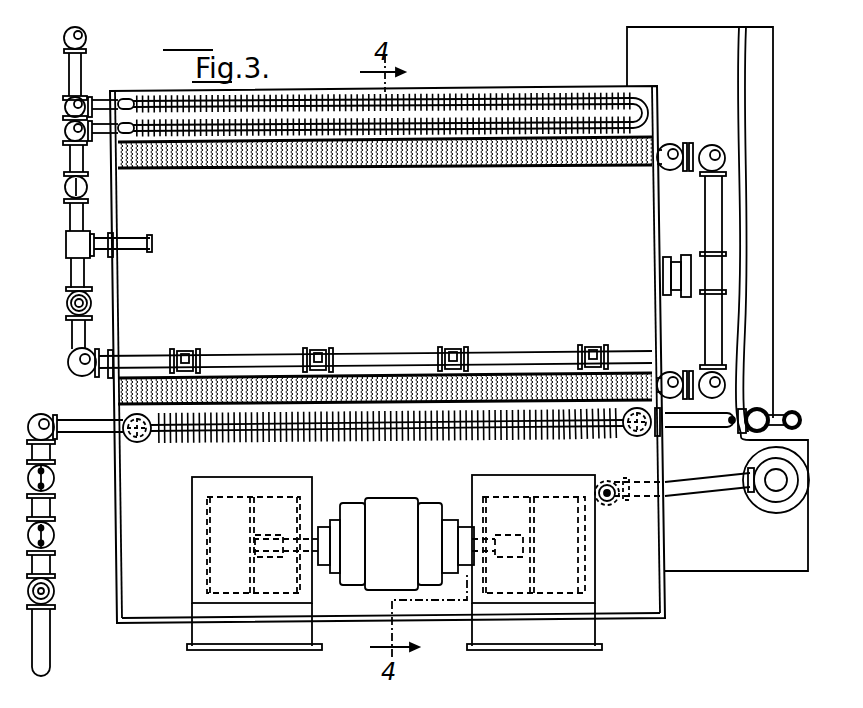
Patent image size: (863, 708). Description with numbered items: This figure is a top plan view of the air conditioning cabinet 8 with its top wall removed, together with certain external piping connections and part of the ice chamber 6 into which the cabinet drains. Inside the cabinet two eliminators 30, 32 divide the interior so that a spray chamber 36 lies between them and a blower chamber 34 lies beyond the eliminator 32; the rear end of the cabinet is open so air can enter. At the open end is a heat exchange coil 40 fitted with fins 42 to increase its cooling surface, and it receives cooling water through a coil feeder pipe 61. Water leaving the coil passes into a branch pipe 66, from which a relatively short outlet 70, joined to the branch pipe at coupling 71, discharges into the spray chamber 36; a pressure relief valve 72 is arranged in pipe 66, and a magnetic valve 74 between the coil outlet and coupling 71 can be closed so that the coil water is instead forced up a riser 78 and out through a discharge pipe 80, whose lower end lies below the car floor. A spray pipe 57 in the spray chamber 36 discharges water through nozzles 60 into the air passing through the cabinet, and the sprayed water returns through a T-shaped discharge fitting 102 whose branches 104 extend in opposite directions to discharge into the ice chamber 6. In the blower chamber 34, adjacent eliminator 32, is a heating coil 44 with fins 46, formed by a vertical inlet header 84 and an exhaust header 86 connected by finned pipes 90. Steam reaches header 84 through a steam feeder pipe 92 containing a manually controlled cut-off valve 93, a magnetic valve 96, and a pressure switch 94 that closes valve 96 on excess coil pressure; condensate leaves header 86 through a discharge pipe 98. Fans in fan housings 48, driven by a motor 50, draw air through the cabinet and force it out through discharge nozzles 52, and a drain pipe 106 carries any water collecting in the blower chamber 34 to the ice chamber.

The ice chamber 6 is at (700, 232).
The air conditioning cabinet 8 is at (666, 539).
The upper filter pad 30 is at (419, 168).
The eliminator 32 is at (534, 378).
The blower chamber 34 is at (391, 533).
The spray chamber 36 is at (387, 354).
The heat exchange coil 40 is at (472, 95).
The fins 42 is at (537, 95).
The heating coil 44 is at (160, 438).
The fins 46 is at (236, 438).
The fan housings 48 is at (202, 550).
The motor 50 is at (392, 520).
The discharge nozzles 52 is at (225, 642).
The spray pipe 57 is at (238, 358).
The nozzles 60 is at (183, 350).
The coil feeder pipe 61 is at (64, 106).
The branch pipe 66 is at (71, 273).
The outlet 70 is at (152, 244).
The coupling 71 is at (66, 245).
The pressure relief valve 72 is at (67, 306).
The magnetic valve 74 is at (65, 187).
The riser 78 is at (64, 131).
The discharge pipe 80 is at (75, 27).
The inlet header 84 is at (138, 444).
The exhaust header 86 is at (647, 434).
The finned pipes 90 is at (575, 430).
The steam feeder pipe 92 is at (42, 651).
The cut-off valve 93 is at (55, 592).
The pressure switch 94 is at (53, 479).
The magnetic valve 96 is at (53, 536).
The discharge pipe 98 is at (700, 431).
The discharge fitting 102 is at (700, 263).
The branches 104 is at (710, 200).
The drain pipe 106 is at (720, 486).